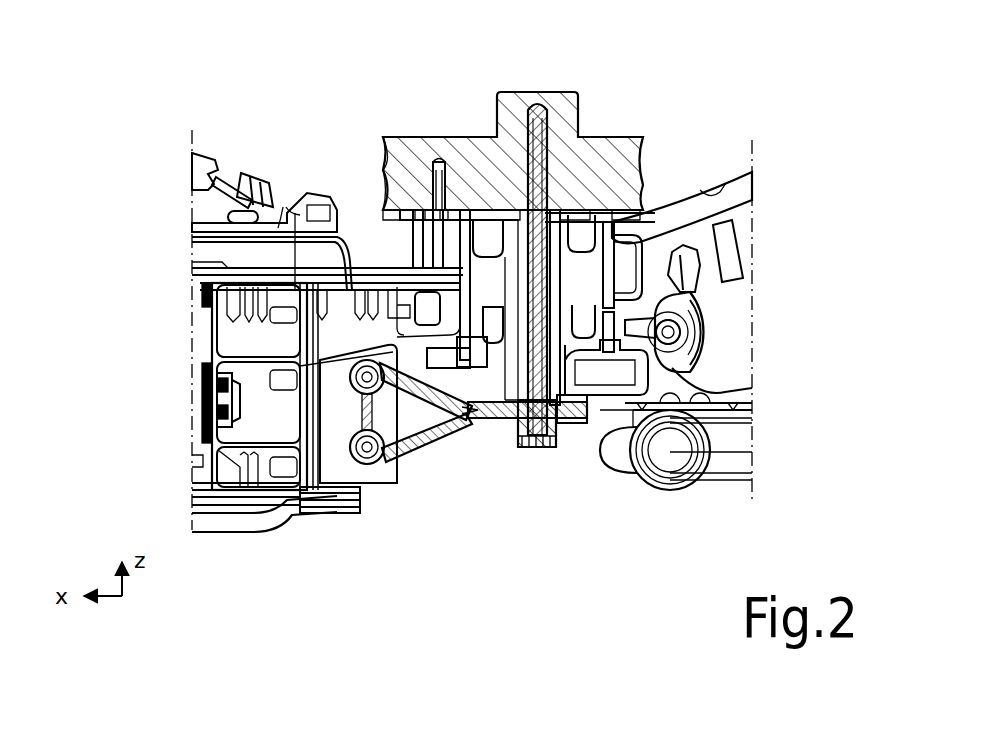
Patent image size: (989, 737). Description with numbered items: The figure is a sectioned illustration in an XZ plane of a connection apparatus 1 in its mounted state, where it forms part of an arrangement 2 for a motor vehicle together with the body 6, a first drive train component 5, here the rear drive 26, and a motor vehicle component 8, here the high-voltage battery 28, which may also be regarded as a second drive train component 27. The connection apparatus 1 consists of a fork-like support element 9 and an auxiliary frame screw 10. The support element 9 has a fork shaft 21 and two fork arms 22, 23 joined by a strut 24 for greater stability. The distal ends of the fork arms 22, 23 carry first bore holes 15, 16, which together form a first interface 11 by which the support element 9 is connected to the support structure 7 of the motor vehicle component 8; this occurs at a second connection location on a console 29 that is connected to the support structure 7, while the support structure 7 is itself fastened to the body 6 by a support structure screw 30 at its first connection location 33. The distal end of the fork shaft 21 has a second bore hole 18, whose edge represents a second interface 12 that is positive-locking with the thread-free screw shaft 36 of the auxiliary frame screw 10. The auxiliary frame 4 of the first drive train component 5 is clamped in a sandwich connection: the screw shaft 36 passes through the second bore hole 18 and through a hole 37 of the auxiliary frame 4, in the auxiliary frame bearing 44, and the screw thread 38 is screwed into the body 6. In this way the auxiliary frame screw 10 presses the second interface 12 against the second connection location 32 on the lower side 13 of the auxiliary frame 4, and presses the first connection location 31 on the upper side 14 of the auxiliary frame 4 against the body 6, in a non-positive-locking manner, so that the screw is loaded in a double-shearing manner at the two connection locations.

The connection apparatus 1 is at (483, 532).
The arrangement 2 is at (413, 100).
The auxiliary frame 4 is at (722, 175).
The first drive train component 5 is at (745, 348).
The body 6 is at (610, 143).
The support structure 7 is at (284, 207).
The motor vehicle component 8 is at (207, 343).
The support element 9 is at (468, 420).
The auxiliary frame screw 10 is at (560, 112).
The first interface 11 is at (343, 420).
The second interface 12 is at (545, 452).
The lower side 13 is at (484, 450).
The upper side 14 is at (463, 128).
The first bore hole 15 is at (350, 378).
The first bore hole 16 is at (352, 490).
The second bore hole 18 is at (556, 424).
The fork shaft 21 is at (520, 420).
The fork arm 22 is at (471, 340).
The fork arm 23 is at (412, 458).
The strut 24 is at (432, 445).
The rear drive 26 is at (668, 332).
The second drive train component 27 is at (259, 386).
The high-voltage battery 28 is at (258, 321).
The console 29 is at (338, 505).
The support structure screw 30 is at (418, 188).
The first connection location 31 is at (498, 135).
The second connection location 32 is at (598, 472).
The first connection location 33 is at (383, 172).
The screw shaft 36 is at (543, 293).
The hole 37 is at (545, 232).
The screw thread 38 is at (533, 160).
The auxiliary frame bearing 44 is at (471, 137).